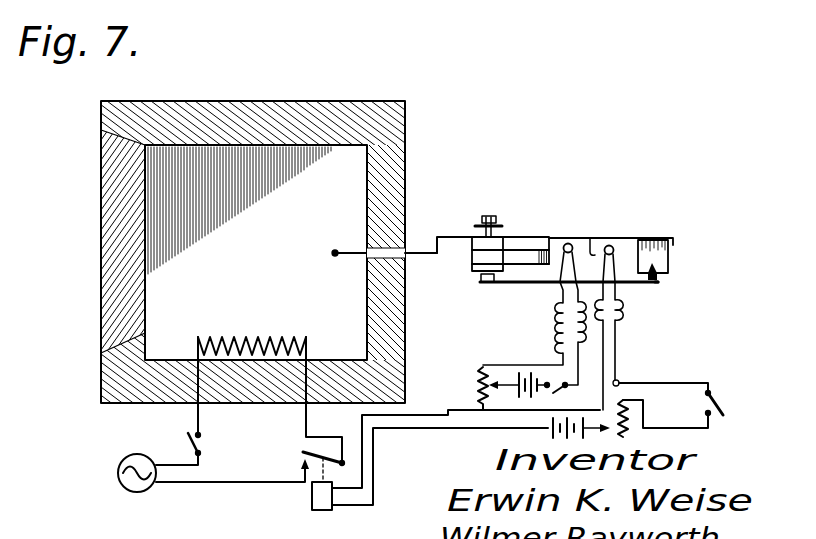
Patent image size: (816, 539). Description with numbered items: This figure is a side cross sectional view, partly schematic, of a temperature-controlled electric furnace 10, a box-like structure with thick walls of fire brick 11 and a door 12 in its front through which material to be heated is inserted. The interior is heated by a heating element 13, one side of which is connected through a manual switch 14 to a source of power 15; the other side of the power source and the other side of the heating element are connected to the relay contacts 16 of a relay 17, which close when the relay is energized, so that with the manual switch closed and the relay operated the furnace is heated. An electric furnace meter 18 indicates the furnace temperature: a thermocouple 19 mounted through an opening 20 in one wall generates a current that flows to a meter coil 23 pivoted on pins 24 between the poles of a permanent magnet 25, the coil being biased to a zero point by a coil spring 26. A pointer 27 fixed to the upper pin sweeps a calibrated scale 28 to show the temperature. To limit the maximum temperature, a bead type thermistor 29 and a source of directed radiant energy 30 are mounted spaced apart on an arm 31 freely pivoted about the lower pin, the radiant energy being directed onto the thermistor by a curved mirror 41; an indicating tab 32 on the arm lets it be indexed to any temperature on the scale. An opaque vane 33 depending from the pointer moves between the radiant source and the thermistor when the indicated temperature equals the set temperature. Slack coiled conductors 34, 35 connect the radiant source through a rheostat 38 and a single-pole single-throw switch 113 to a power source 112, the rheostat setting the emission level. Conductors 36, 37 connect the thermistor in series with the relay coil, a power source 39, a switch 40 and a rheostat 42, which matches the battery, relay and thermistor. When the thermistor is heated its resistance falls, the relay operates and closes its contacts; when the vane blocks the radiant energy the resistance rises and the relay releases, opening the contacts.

The electric furnace 10 is at (268, 98).
The fire brick 11 is at (159, 106).
The door 12 is at (116, 230).
The heating element 13 is at (236, 336).
The manual switch 14 is at (187, 434).
The source of power 15 is at (118, 466).
The relay contacts 16 is at (301, 471).
The relay 17 is at (312, 494).
The electric furnace meter 18 is at (517, 228).
The thermocouple 19 is at (335, 250).
The opening 20 is at (407, 236).
The meter coil 23 is at (472, 270).
The pins 24 is at (493, 216).
The permanent magnet 25 is at (536, 250).
The coil spring 26 is at (484, 222).
The pointer 27 is at (613, 245).
The calibrated scale 28 is at (670, 265).
The bead type thermistor 29 is at (626, 238).
The source of directed radiant energy 30 is at (574, 243).
The arm 31 is at (652, 283).
The indicating tab 32 is at (660, 281).
The opaque vane 33 is at (591, 238).
The conductor 34 is at (556, 306).
The conductor 35 is at (557, 338).
The conductor 36 is at (605, 336).
The conductor 37 is at (619, 352).
The rheostat 38 is at (477, 386).
The power source 39 is at (585, 431).
The switch 40 is at (699, 410).
The curved mirror 41 is at (557, 277).
The rheostat 42 is at (630, 437).
The power source 112 is at (518, 375).
The single-pole single-throw switch 113 is at (558, 389).